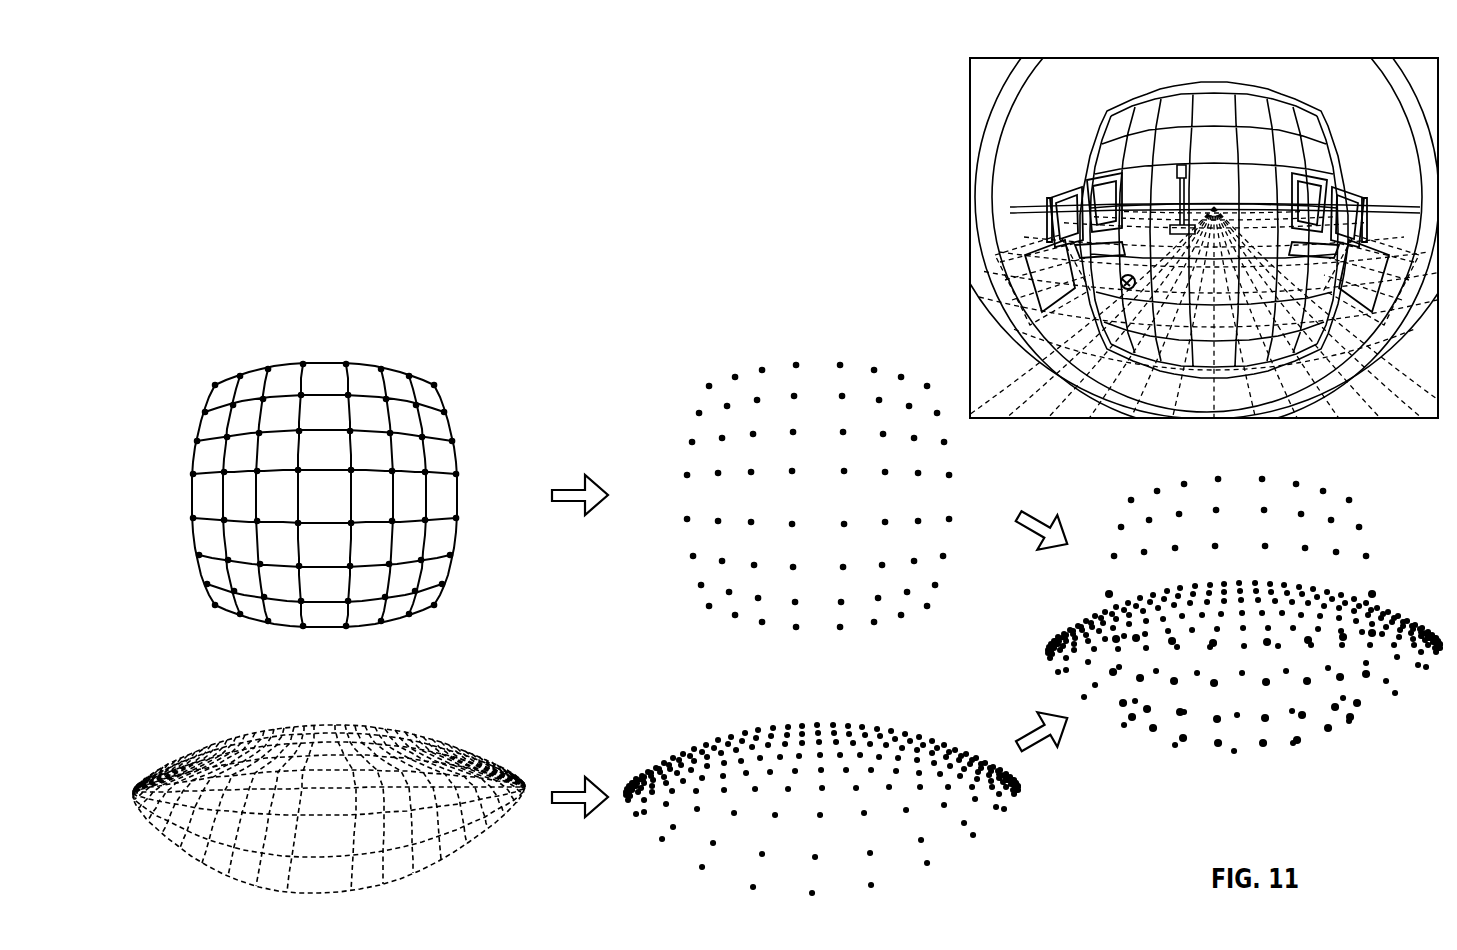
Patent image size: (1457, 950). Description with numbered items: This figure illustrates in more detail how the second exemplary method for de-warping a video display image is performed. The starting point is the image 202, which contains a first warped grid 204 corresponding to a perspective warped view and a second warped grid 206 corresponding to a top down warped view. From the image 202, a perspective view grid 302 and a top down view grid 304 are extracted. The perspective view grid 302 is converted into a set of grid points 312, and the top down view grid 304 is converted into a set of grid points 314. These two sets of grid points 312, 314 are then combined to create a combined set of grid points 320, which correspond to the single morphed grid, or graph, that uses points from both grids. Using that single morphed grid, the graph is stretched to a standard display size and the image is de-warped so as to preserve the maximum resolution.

The image 202 is at (1075, 58).
The first warped grid 204 is at (1205, 90).
The second warped grid 206 is at (1043, 243).
The perspective view grid 302 is at (214, 384).
The top down view grid 304 is at (191, 746).
The grid points 312 is at (750, 378).
The grid points 314 is at (943, 853).
The combined set of grid points 320 is at (1167, 492).